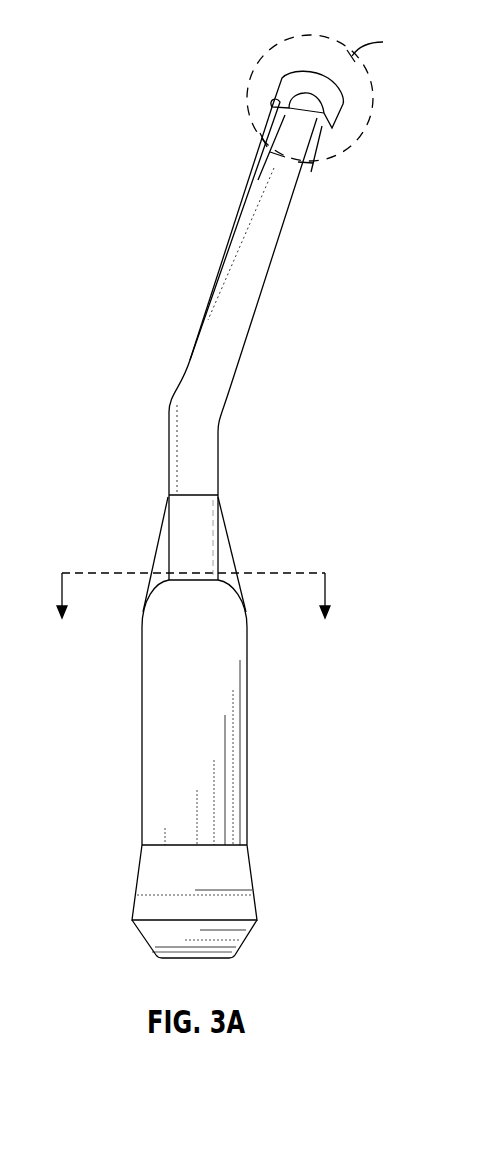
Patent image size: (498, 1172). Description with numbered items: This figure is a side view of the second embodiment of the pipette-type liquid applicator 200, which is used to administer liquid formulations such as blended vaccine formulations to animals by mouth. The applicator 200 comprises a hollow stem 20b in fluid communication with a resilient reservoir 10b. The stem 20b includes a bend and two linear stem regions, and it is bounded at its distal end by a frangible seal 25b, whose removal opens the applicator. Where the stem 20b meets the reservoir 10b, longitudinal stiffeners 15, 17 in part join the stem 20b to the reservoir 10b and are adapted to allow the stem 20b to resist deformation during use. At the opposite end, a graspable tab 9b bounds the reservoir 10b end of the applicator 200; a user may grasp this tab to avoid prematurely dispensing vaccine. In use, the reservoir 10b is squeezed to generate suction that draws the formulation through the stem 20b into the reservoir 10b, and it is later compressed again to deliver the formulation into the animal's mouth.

The applicator 200 is at (144, 175).
The frangible seal 25b is at (282, 88).
The hollow stem 20b is at (247, 245).
The longitudinal stiffener 17 is at (157, 547).
The longitudinal stiffener 15 is at (233, 545).
The resilient reservoir 10b is at (155, 730).
The graspable tab 9b is at (155, 877).